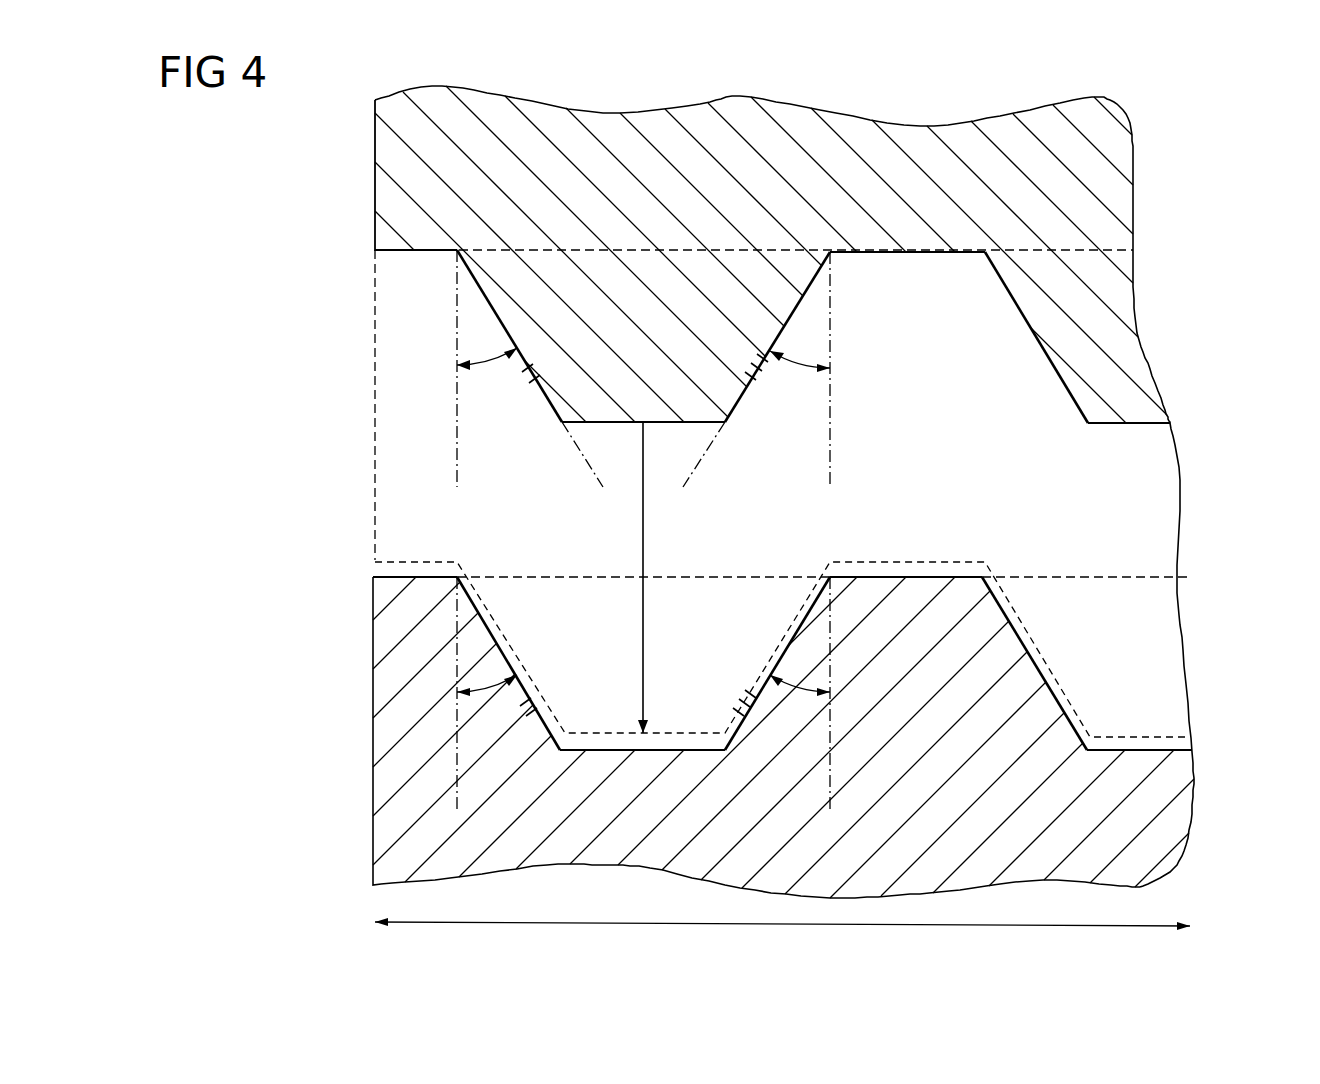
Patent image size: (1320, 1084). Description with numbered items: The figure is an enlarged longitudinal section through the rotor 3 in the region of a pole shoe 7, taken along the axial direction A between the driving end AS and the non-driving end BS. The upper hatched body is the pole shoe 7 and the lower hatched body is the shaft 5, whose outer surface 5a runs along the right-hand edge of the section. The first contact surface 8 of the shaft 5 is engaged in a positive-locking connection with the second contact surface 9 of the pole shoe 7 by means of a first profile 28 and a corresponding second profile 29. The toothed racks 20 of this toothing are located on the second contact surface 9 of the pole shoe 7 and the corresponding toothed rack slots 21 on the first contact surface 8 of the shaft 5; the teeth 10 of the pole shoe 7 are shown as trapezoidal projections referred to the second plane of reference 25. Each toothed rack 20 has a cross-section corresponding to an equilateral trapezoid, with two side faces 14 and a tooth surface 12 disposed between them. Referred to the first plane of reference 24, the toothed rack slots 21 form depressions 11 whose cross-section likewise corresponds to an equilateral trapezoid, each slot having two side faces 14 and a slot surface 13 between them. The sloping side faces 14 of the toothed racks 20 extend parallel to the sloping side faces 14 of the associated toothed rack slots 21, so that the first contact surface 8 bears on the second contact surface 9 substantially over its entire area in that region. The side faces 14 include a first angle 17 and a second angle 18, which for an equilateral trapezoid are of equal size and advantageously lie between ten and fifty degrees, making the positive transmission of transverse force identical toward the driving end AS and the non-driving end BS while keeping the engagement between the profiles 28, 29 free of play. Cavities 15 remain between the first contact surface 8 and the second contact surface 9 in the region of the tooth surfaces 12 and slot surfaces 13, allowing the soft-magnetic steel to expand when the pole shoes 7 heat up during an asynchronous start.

The rotor 3 is at (1187, 105).
The shaft 5 is at (397, 852).
The outer surface of first component 5a is at (1170, 815).
The pole shoe 7 is at (1122, 210).
The first contact surface 8 is at (386, 577).
The second contact surface 9 is at (388, 250).
The tooth 10 is at (525, 340).
The toothed rack 20 is at (1050, 342).
The depression 11 is at (688, 690).
The toothed rack slot 21 is at (1133, 690).
The tooth surface 12 is at (625, 424).
The slot surface 13 is at (648, 750).
The side face 14 is at (493, 315).
The cavity 15 is at (590, 750).
The first angle 17 is at (490, 368).
The second angle 18 is at (802, 368).
The first plane of reference 24 is at (1150, 577).
The second reference plane 25 is at (1108, 250).
The first profile 28 is at (563, 625).
The second profile 29 is at (547, 320).
The axial direction A is at (782, 938).
The driving end AS is at (352, 128).
The non-driving end BS is at (1235, 862).